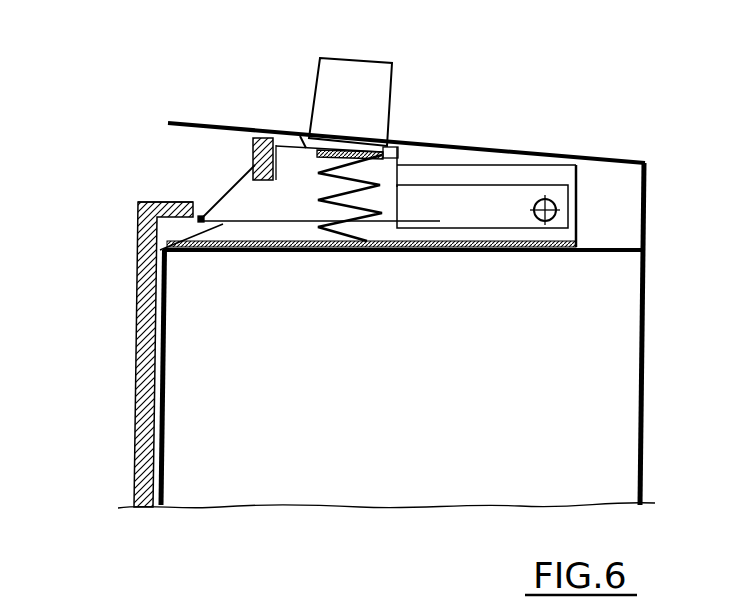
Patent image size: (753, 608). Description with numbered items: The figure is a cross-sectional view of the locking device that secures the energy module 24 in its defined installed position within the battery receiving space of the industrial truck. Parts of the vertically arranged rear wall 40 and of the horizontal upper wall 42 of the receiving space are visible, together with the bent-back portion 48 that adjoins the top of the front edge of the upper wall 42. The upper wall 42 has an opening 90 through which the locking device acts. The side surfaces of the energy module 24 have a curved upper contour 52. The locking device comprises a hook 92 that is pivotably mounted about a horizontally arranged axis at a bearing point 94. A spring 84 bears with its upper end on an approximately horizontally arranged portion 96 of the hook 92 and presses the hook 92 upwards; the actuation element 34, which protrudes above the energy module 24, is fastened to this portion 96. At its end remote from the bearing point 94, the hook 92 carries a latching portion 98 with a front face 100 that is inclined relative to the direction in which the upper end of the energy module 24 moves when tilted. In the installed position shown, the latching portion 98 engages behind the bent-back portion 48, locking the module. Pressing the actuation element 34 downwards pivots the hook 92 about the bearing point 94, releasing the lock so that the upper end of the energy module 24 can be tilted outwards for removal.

The energy module 24 is at (247, 432).
The actuation element 34 is at (370, 78).
The rear wall 40 is at (137, 371).
The upper wall 42 is at (158, 200).
The bent-back portion 48 is at (252, 151).
The curved upper contour 52 is at (192, 229).
The spring 84 is at (370, 183).
The opening 90 is at (193, 203).
The hook 92 is at (507, 198).
The bearing point 94 is at (553, 203).
The horizontally arranged portion 96 is at (304, 147).
The latching portion 98 is at (245, 177).
The front face 100 is at (215, 203).